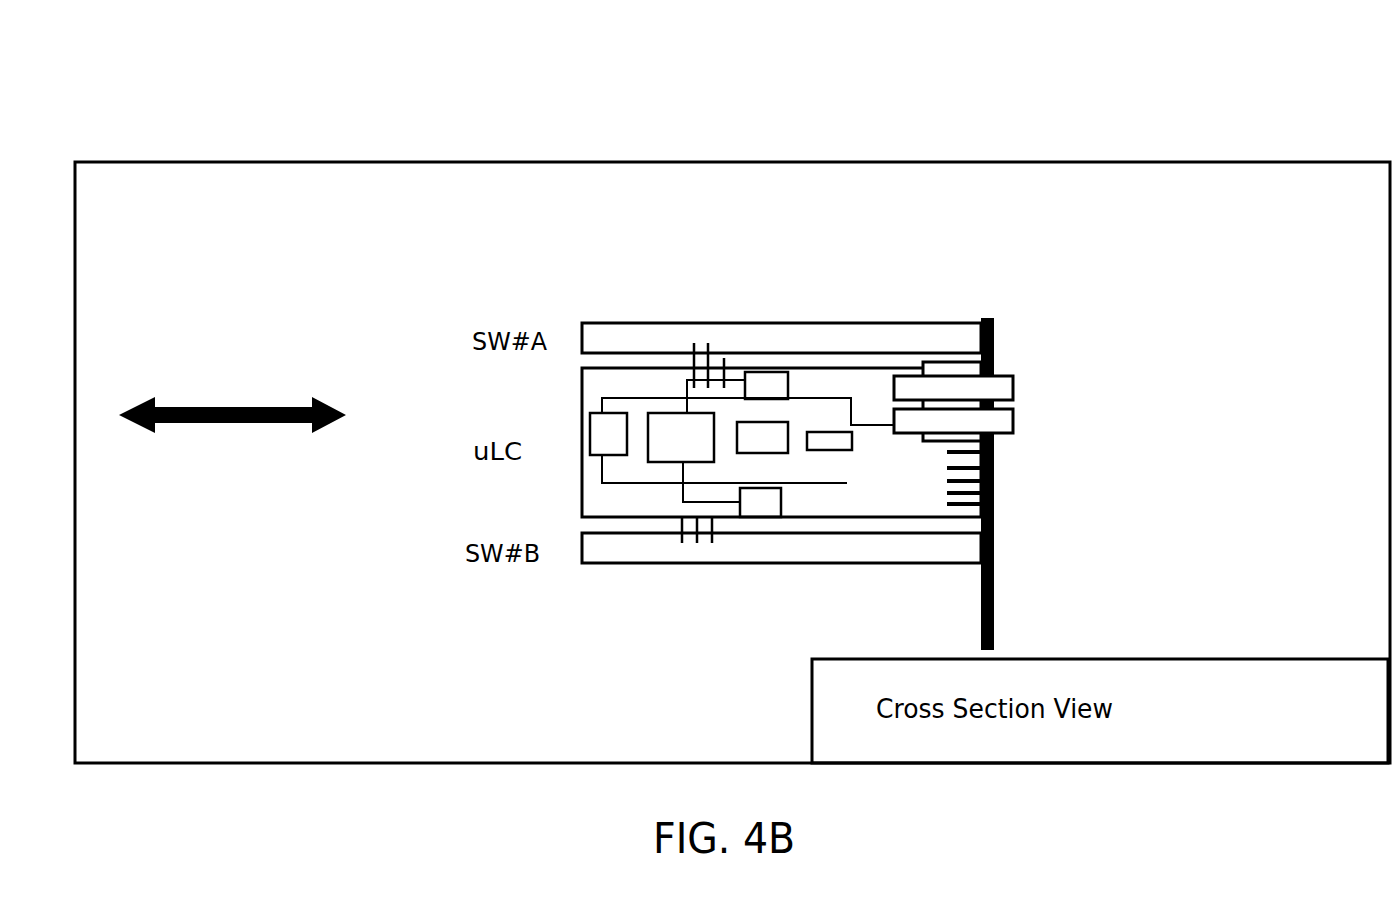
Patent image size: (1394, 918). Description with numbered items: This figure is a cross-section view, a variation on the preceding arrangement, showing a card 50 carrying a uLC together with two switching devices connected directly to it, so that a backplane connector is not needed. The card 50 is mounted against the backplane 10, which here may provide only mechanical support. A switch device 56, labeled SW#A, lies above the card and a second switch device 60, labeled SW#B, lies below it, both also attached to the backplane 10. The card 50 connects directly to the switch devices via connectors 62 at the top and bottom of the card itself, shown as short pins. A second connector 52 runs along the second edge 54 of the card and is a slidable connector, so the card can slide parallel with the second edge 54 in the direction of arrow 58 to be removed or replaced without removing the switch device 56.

The backplane 10 is at (970, 573).
The card 50 is at (588, 504).
The second connector 52 is at (603, 381).
The second edge 54 is at (813, 380).
The switch device 56 is at (661, 335).
The arrow 58 is at (226, 428).
The second switch device 60 is at (790, 565).
The connectors 62 is at (723, 345).